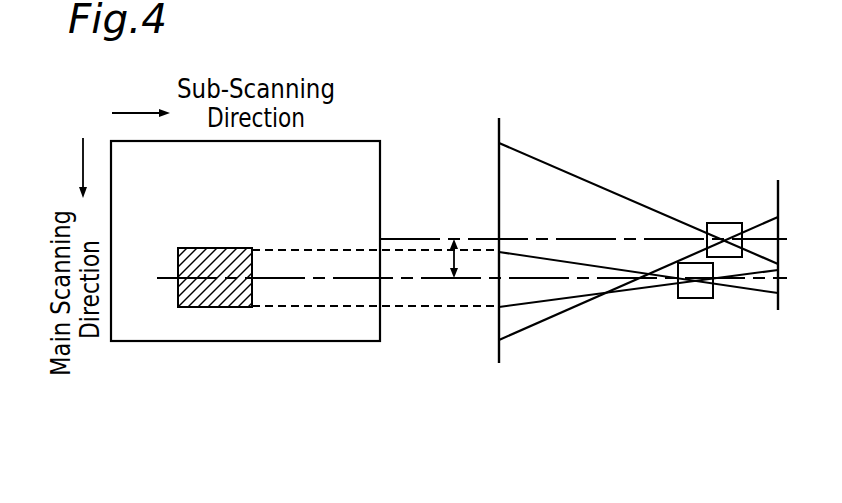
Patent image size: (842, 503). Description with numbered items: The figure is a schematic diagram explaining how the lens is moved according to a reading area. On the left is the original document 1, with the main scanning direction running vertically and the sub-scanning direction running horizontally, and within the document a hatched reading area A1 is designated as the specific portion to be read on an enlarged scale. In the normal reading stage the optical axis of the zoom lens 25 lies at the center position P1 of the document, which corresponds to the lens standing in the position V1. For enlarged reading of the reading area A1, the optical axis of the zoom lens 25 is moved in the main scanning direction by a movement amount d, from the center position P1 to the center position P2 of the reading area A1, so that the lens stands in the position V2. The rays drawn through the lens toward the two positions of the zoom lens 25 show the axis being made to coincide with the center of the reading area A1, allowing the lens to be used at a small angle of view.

The original document 1 is at (364, 141).
The zoom lens 25 is at (718, 223).
The reading area A1 is at (181, 248).
The center position P1 is at (422, 239).
The center position P2 is at (415, 279).
The movement amount d is at (455, 250).
The position V1 is at (738, 222).
The position V2 is at (708, 300).